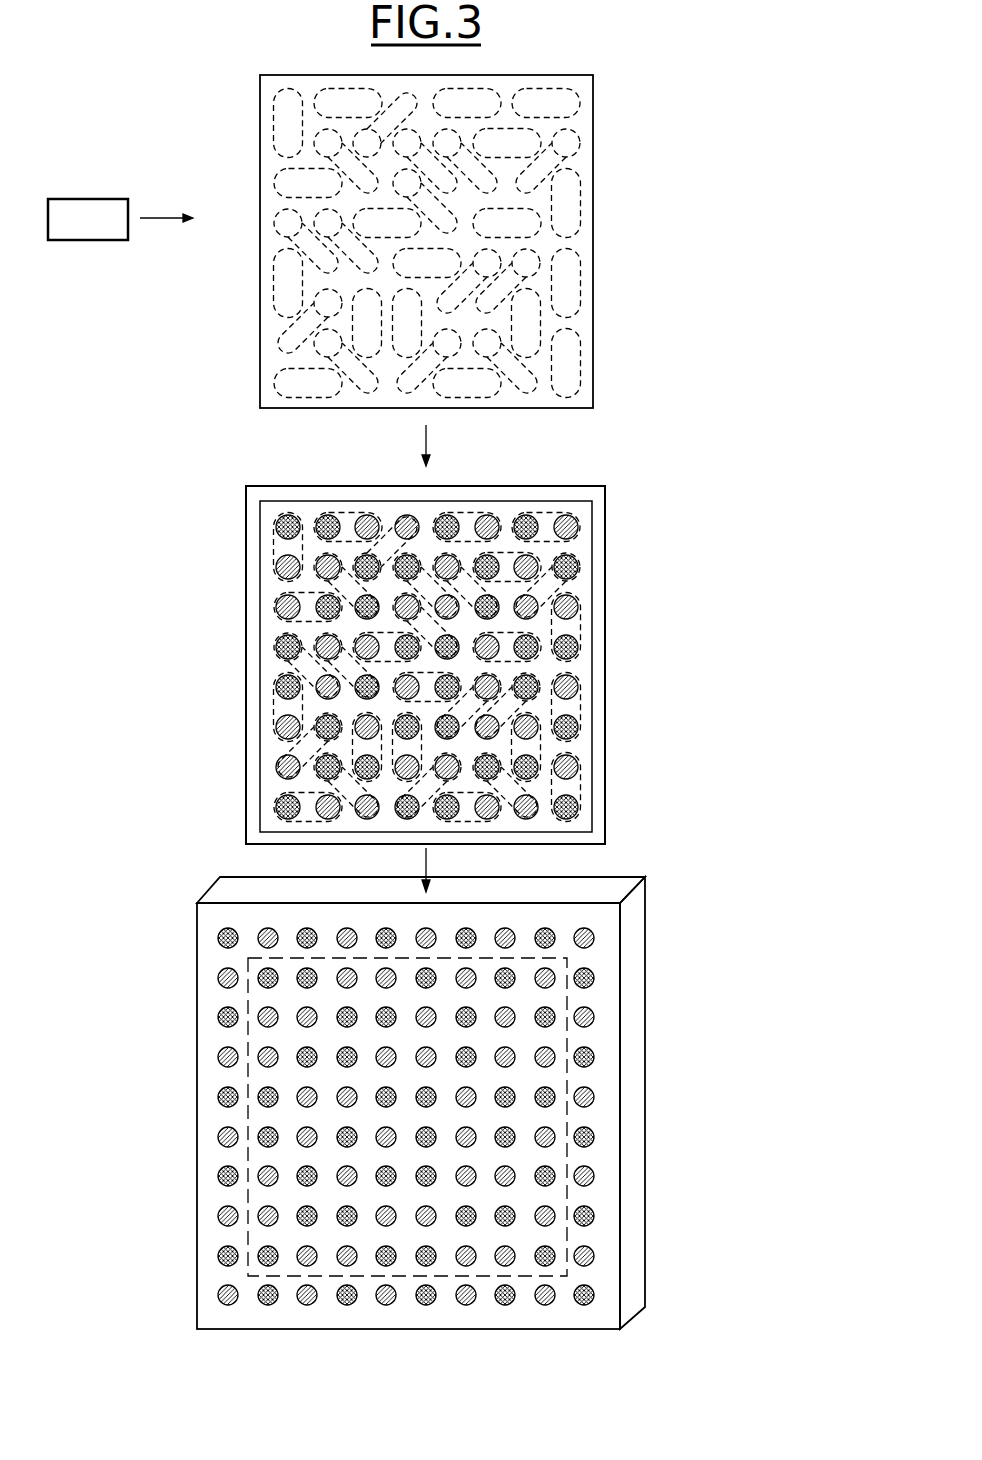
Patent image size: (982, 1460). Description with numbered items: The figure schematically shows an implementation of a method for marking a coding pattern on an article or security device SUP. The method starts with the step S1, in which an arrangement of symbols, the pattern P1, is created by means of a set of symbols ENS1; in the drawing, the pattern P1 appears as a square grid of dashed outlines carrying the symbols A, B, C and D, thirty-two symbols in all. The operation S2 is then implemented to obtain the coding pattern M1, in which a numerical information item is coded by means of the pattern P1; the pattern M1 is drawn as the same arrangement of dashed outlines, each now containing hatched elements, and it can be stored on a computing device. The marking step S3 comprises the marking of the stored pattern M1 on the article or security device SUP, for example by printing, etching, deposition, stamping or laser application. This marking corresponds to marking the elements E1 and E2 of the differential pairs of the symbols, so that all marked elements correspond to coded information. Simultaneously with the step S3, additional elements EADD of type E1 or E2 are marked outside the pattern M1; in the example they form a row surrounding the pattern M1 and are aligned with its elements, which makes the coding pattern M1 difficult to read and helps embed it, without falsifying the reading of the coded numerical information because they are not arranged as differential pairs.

The set of symbols ENS1 is at (88, 219).
The step for creation of an arrangement of symbols S1 is at (166, 195).
The pattern P1 is at (372, 241).
The operation S2 is at (399, 445).
The coding pattern M1 is at (363, 881).
The marking step S3 is at (399, 870).
The article or security device SUP is at (375, 1103).
The additional elements EADD is at (667, 934).
The element of differential pair E1 is at (423, 986).
The element of differential pair E2 is at (423, 1026).